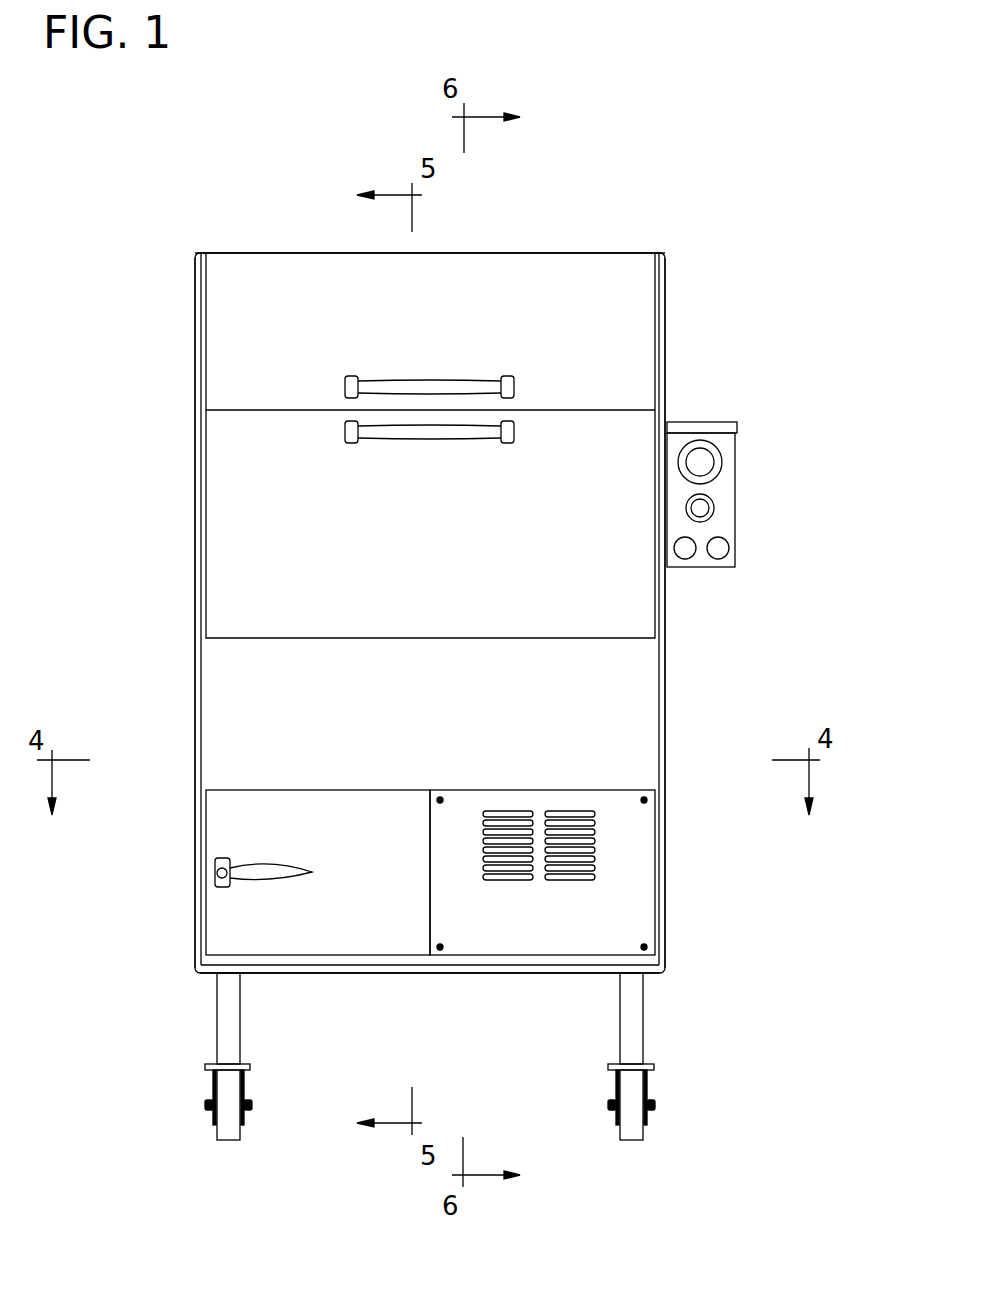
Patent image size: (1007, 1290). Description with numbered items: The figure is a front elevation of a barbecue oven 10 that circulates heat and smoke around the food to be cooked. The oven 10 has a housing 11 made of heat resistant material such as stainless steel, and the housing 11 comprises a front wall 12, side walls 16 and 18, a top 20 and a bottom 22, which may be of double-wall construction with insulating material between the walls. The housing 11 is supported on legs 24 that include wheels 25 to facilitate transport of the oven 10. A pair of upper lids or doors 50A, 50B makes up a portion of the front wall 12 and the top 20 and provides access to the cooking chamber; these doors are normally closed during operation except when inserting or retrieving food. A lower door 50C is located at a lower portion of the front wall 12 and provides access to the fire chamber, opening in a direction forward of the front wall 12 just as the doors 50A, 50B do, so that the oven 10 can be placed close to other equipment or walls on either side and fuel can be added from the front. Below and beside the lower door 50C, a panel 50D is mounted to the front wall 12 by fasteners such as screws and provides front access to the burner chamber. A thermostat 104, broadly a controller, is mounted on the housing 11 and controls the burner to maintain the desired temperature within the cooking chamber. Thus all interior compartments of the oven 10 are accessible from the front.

The barbecue oven 10 is at (708, 210).
The housing 11 is at (184, 628).
The front wall 12 is at (613, 710).
The side wall 16 is at (665, 630).
The side wall 18 is at (195, 695).
The top 20 is at (232, 253).
The bottom 22 is at (322, 972).
The legs 24 is at (228, 1018).
The wheels 25 is at (230, 1135).
The upper door 50A is at (596, 295).
The upper door 50B is at (260, 502).
The lower door 50C is at (260, 825).
The panel 50D is at (613, 912).
The thermostat 104 is at (705, 421).